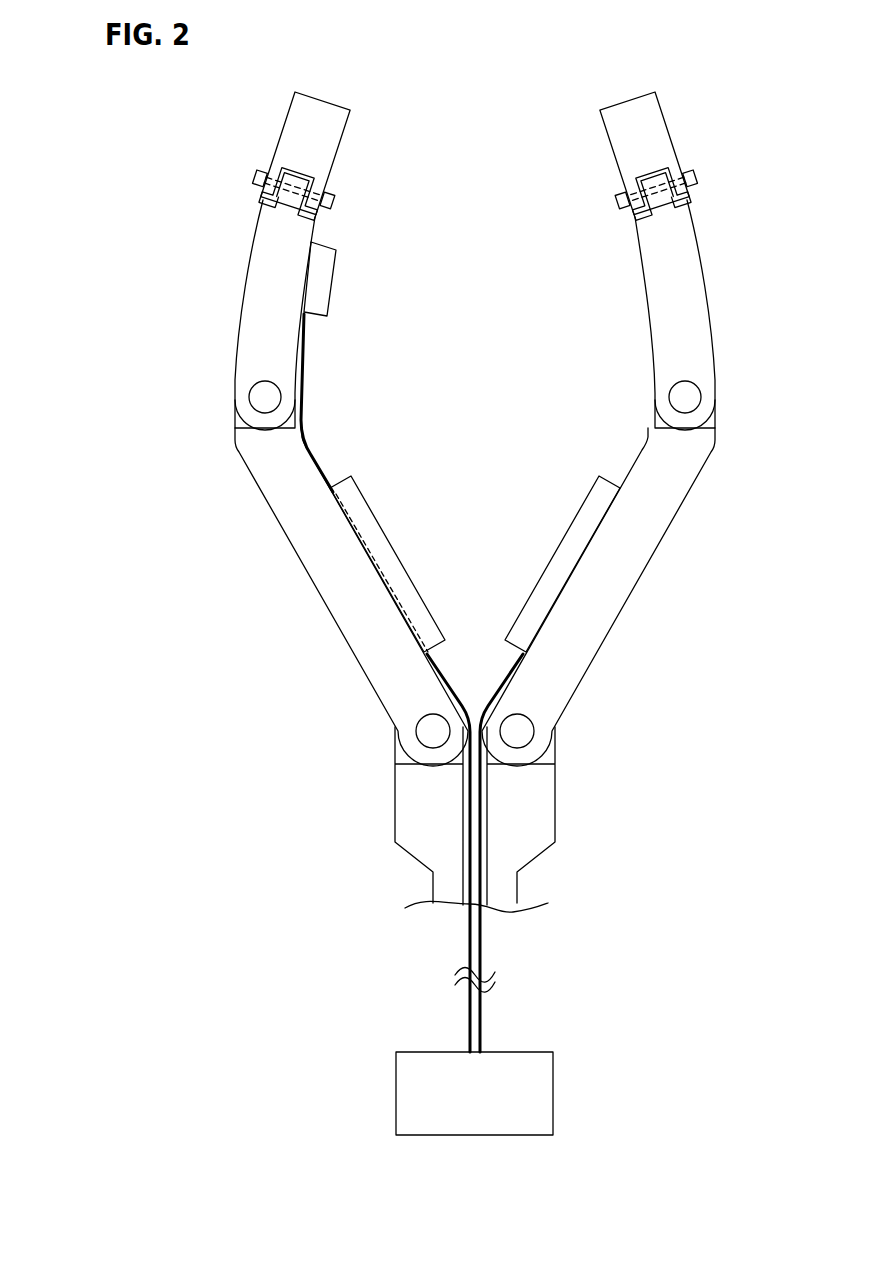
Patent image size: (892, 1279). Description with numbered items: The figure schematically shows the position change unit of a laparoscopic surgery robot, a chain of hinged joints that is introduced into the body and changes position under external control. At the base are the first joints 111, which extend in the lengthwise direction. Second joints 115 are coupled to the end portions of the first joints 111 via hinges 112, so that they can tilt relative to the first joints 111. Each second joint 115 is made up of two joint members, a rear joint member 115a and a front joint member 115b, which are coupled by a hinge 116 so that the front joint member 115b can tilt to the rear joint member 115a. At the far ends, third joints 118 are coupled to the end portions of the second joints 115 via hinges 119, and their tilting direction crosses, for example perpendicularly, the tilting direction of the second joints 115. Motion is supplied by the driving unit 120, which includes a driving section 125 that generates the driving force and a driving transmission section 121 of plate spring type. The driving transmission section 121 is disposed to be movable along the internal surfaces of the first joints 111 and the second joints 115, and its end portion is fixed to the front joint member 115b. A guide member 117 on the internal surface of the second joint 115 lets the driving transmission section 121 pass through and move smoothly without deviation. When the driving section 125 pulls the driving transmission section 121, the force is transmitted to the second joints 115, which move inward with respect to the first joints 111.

The first joint 111 is at (428, 833).
The hinge 112 is at (433, 731).
The second joint 115 is at (241, 483).
The rear joint member 115a is at (301, 522).
The front joint member 115b is at (250, 350).
The hinge 116 is at (267, 397).
The guide member 117 is at (377, 507).
The third joint 118 is at (277, 140).
The hinge 119 is at (335, 203).
The driving unit 120 is at (535, 724).
The driving transmission section 121 is at (472, 848).
The driving section 125 is at (515, 1050).